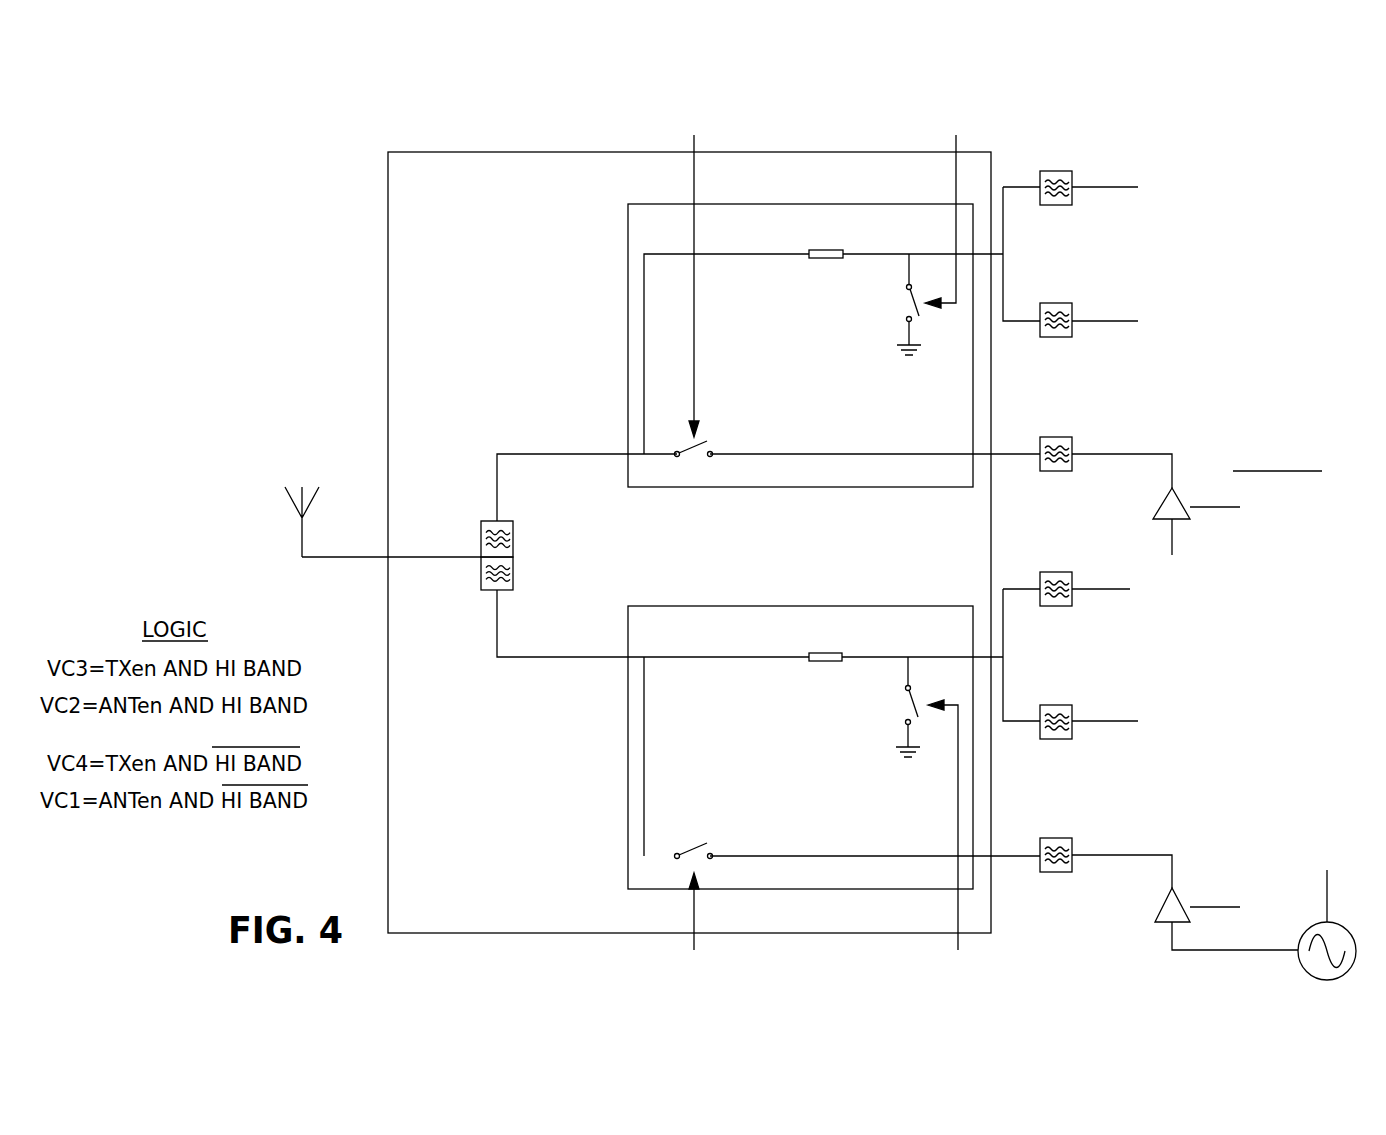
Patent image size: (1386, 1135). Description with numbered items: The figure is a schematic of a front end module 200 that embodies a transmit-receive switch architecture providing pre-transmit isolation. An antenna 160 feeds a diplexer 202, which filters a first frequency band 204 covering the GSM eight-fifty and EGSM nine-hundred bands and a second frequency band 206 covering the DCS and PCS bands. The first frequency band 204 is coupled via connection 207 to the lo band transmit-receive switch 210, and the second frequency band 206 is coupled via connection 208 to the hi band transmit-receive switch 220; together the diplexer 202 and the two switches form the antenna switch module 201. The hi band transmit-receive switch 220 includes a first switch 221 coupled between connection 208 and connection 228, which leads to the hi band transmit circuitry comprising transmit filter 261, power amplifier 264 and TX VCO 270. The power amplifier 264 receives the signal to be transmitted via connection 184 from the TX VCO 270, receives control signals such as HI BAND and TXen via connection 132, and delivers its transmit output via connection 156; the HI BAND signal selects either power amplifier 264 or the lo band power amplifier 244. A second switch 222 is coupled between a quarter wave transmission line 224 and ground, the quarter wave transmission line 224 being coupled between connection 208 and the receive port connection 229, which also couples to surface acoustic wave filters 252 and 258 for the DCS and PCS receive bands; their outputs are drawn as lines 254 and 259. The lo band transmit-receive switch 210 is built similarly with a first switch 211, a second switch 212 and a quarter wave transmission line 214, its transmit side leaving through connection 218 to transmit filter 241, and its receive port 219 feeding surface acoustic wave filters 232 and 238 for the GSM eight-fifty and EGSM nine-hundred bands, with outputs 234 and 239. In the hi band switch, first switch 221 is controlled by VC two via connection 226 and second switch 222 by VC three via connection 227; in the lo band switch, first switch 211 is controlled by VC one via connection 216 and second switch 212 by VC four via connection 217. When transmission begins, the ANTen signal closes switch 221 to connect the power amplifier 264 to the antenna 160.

The front end module 200 is at (214, 219).
The antenna switch module 201 is at (481, 264).
The antenna 160 is at (290, 503).
The diplexer 202 is at (460, 520).
The first frequency band 204 is at (513, 540).
The second frequency band 206 is at (513, 572).
The connection 207 is at (520, 454).
The connection 208 is at (520, 657).
The transmit-receive switch 210 is at (676, 234).
The first switch 211 is at (724, 424).
The second switch 212 is at (886, 305).
The quarter wave transmission line 214 is at (826, 258).
The connection 216 is at (694, 184).
The connection 217 is at (956, 178).
The connection 218 is at (818, 454).
The receive port 219 is at (936, 252).
The transmit-receive switch 220 is at (676, 633).
The first switch 221 is at (724, 824).
The second switch 222 is at (883, 705).
The quarter wave transmission line 224 is at (824, 661).
The connection 226 is at (694, 910).
The connection 227 is at (958, 902).
The connection 228 is at (820, 856).
The receive port 229 is at (938, 655).
The surface acoustic wave filter 232 is at (1057, 171).
The RX GSM850 output 234 is at (1098, 188).
The surface acoustic wave filter 238 is at (1046, 303).
The RX EGSM900 output 239 is at (1097, 322).
The low band transmit filter 241 is at (1047, 437).
The connection 156 is at (1133, 456).
The power amplifier 244 is at (1153, 519).
The connection 184 is at (1175, 536).
The connection 132 is at (1220, 508).
The surface acoustic wave filter 252 is at (1047, 572).
The RX DCS1800 output 254 is at (1098, 589).
The surface acoustic wave filter 258 is at (1050, 739).
The RX PCS1900 output 259 is at (1110, 722).
The transmit filter 261 is at (1046, 838).
The power amplifier 264 is at (1155, 922).
The TX VCO 270 is at (1303, 968).